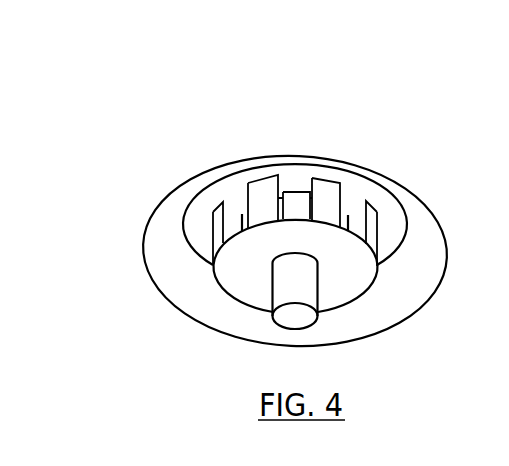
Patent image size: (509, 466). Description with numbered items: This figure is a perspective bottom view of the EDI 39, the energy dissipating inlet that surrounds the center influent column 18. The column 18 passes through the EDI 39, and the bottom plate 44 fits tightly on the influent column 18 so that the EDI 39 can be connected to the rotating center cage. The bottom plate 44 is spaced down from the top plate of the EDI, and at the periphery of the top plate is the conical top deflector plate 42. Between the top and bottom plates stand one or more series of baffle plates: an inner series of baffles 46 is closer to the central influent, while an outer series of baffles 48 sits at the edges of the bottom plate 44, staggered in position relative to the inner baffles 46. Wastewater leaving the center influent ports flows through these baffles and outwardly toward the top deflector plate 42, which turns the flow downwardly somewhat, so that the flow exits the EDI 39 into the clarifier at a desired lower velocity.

The EDI 39 is at (449, 168).
The top deflector plate 42 is at (225, 247).
The bottom plate 44 is at (233, 270).
The inner series of baffles 46 is at (234, 197).
The outer series of baffles 48 is at (264, 195).
The center influent column 18 is at (232, 325).